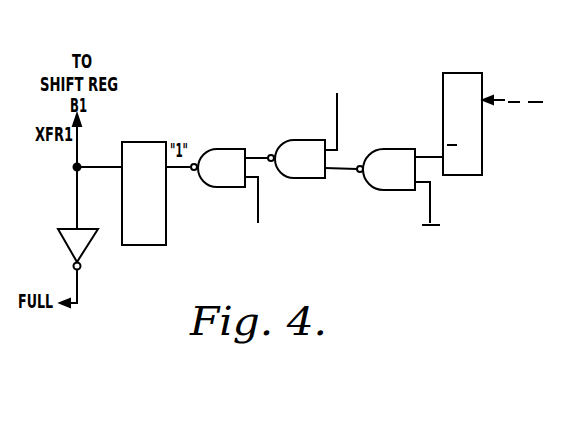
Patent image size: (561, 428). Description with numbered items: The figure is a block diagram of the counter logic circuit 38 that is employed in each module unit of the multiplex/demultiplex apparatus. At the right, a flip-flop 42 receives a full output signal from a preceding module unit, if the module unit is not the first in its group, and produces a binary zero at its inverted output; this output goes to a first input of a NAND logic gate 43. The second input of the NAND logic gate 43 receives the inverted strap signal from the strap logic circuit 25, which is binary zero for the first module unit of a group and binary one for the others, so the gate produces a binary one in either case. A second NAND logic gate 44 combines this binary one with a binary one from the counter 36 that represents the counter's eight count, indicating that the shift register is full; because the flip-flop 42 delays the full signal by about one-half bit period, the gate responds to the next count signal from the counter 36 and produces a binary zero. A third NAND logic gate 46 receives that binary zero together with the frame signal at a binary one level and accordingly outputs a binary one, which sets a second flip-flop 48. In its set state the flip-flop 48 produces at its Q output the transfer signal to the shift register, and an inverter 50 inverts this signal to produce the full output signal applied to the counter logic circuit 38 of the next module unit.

The strap logic circuit 25 is at (425, 296).
The counter 36 is at (348, 71).
The counter logic circuit 38 is at (252, 110).
The flip-flop 42 is at (462, 73).
The NAND logic gate 43 is at (389, 149).
The second NAND logic gate 44 is at (292, 140).
The third NAND logic gate 46 is at (216, 149).
The second flip-flop 48 is at (136, 245).
The inverter 50 is at (64, 243).